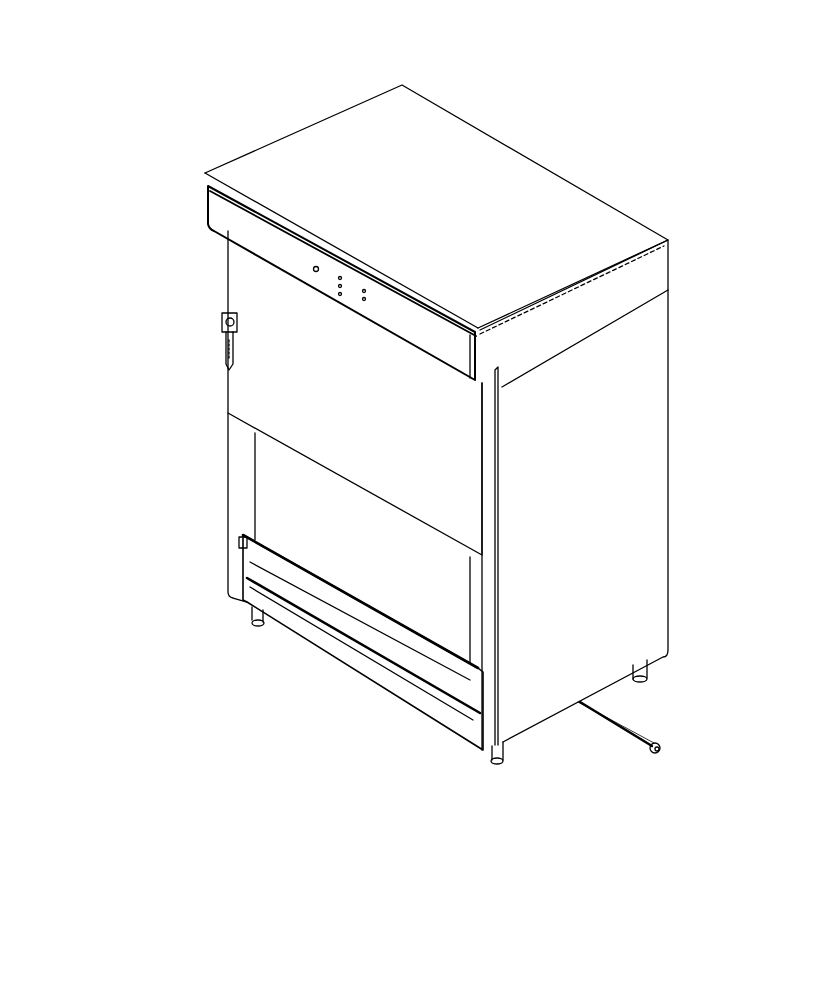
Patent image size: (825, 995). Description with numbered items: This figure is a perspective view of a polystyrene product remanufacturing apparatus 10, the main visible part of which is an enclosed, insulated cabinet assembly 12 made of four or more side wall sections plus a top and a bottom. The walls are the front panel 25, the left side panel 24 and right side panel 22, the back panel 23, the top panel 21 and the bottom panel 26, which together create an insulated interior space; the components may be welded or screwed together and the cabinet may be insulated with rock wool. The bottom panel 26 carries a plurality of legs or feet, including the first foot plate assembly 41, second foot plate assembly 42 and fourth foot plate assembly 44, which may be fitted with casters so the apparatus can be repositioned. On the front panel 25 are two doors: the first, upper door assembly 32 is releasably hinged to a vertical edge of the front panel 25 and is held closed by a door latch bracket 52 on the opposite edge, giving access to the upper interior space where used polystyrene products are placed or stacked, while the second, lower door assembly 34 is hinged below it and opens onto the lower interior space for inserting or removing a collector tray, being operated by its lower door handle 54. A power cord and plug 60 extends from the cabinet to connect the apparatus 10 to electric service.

The polystyrene product remanufacturing apparatus 10 is at (592, 105).
The cabinet assembly 12 is at (328, 157).
The top panel 21 is at (423, 191).
The right side panel 22 is at (620, 455).
The back panel 23 is at (692, 347).
The left side panel 24 is at (180, 398).
The front panel 25 is at (384, 541).
The bottom panel 26 is at (368, 688).
The first door assembly 32 is at (395, 405).
The second door assembly 34 is at (325, 608).
The first foot plate assembly 41 is at (490, 760).
The second foot plate assembly 42 is at (648, 668).
The fourth foot plate assembly 44 is at (247, 615).
The door latch bracket 52 is at (222, 338).
The lower door handle 54 is at (238, 557).
The power cord and plug 60 is at (612, 723).